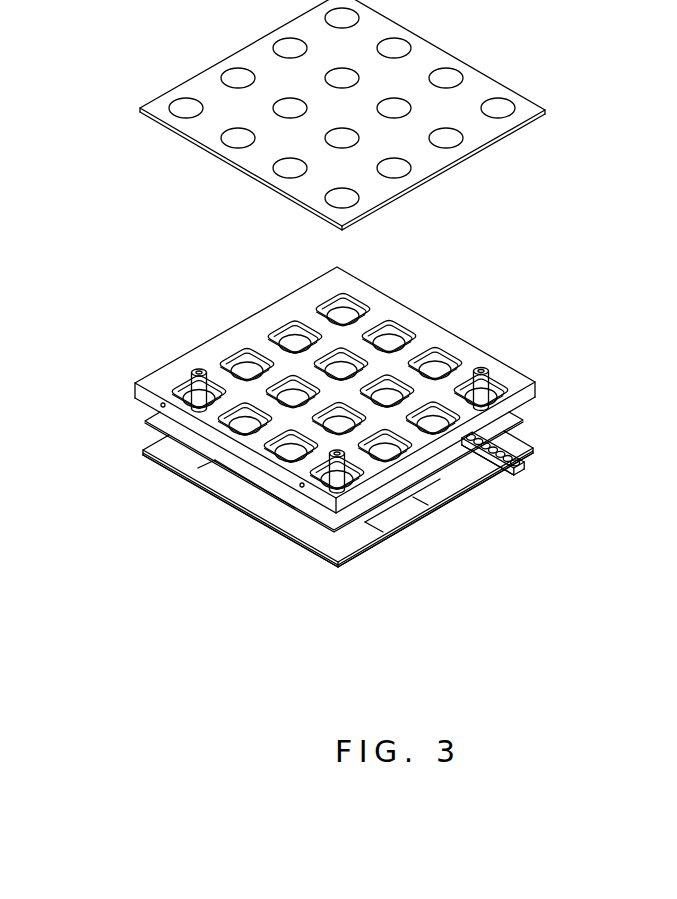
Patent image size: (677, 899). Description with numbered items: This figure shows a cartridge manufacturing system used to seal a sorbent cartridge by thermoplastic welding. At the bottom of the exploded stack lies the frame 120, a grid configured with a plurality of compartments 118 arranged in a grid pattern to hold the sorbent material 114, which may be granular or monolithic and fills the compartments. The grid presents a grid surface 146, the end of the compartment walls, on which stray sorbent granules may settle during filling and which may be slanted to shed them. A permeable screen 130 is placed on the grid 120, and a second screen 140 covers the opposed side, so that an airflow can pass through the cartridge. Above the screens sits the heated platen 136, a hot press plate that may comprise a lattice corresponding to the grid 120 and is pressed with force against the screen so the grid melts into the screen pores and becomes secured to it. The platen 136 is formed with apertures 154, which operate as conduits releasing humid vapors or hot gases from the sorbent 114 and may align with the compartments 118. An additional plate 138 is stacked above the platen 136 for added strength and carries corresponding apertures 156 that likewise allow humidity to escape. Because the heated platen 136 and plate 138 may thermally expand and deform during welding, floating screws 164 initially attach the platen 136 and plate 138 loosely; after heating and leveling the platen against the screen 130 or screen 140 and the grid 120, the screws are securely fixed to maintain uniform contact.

The additional plate 138 is at (532, 110).
The apertures 156 is at (184, 108).
The heated platen 136 is at (533, 385).
The apertures 154 is at (288, 452).
The floating screws 164 is at (193, 372).
The screen 140 is at (513, 427).
The compartments 118 is at (273, 510).
The screen 130 is at (305, 549).
The grid surface 146 is at (378, 520).
The sorbent material 114 is at (530, 450).
The frame 120 is at (450, 493).